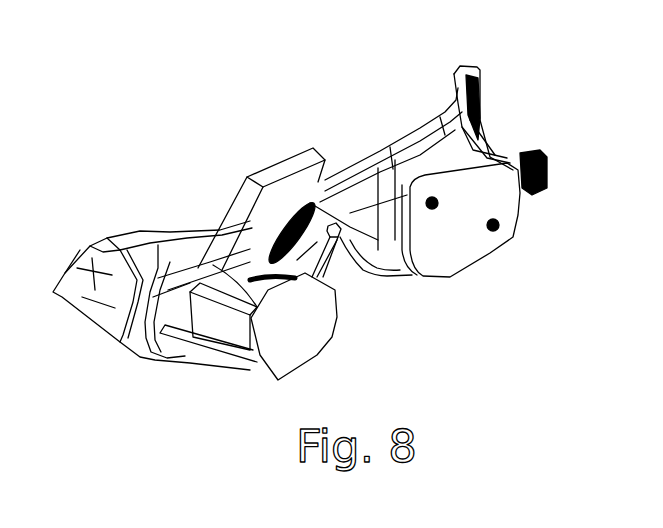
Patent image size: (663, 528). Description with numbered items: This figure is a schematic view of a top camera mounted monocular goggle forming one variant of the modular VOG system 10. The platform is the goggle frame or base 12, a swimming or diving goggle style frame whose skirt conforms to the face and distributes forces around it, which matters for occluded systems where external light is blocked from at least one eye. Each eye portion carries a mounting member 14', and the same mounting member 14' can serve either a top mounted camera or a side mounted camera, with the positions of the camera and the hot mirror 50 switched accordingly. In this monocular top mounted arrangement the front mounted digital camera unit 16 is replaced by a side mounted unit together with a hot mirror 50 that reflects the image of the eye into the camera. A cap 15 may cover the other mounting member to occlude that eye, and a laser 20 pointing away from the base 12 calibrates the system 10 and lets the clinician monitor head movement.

The VOG system 10 is at (300, 110).
The goggle frame or base 12 is at (457, 86).
The mounting member 14' is at (311, 255).
The cap 15 is at (517, 193).
The digital camera unit 16 is at (333, 167).
The laser 20 is at (338, 238).
The hot mirror 50 is at (297, 348).